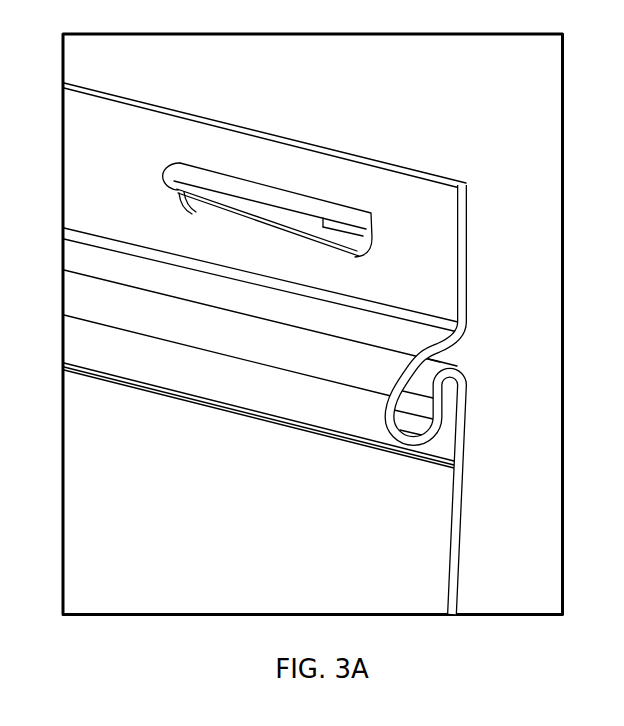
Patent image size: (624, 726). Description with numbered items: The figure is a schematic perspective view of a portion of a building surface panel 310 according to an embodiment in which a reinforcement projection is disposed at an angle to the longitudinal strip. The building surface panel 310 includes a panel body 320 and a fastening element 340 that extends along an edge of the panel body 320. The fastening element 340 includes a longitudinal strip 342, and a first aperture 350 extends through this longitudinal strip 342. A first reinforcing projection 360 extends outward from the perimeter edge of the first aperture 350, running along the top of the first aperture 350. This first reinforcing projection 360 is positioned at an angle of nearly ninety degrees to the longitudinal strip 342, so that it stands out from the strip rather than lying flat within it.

The building surface panel 310 is at (296, 341).
The panel body 320 is at (208, 520).
The fastening element 340 is at (507, 259).
The longitudinal strip 342 is at (148, 148).
The first aperture 350 is at (228, 209).
The first reinforcing projection 360 is at (292, 208).